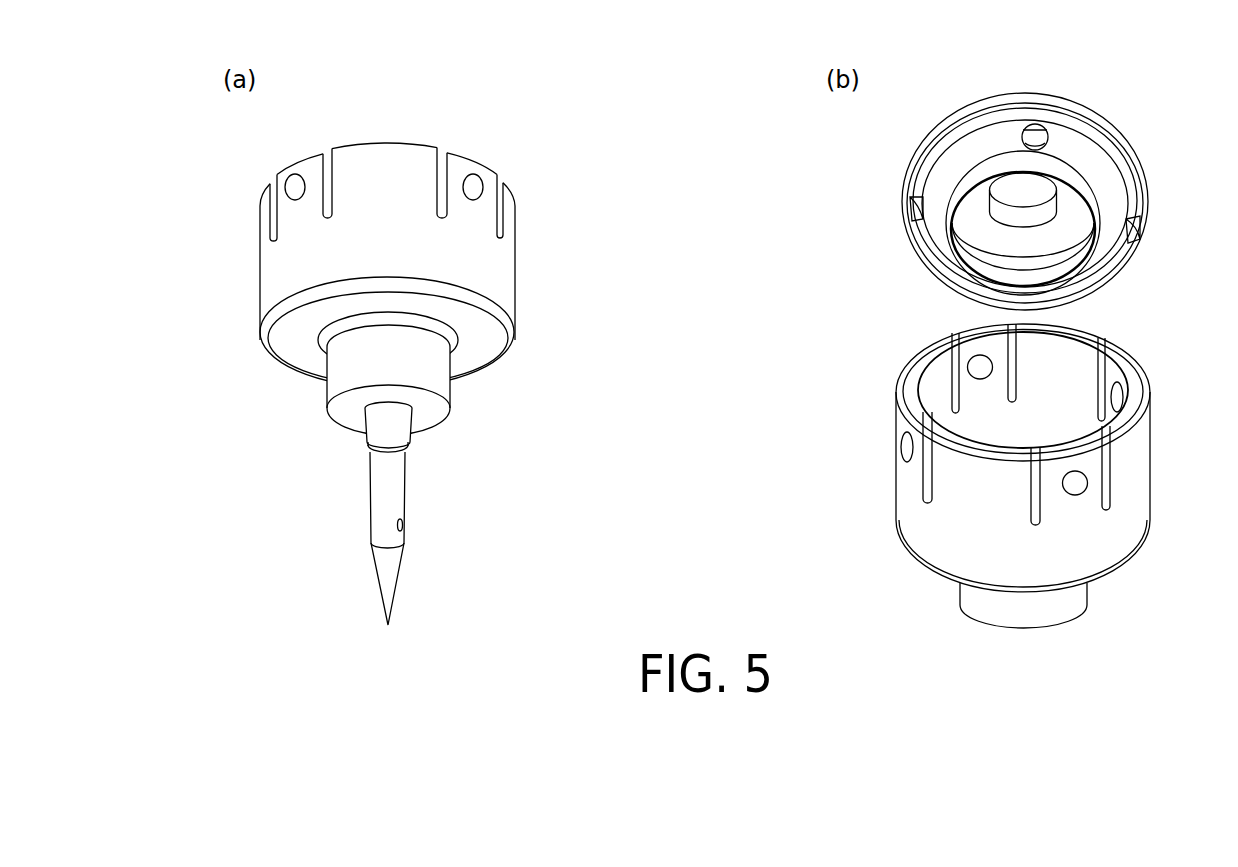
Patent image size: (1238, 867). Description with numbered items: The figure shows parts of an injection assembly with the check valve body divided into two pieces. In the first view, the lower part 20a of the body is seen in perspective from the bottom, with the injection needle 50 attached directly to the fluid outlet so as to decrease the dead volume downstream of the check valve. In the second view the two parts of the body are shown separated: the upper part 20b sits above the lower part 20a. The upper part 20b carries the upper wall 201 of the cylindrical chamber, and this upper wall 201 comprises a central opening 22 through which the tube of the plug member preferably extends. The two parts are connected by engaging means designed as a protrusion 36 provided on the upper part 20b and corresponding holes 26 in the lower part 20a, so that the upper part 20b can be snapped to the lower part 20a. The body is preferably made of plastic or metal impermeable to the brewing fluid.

The lower part of the body 20a is at (530, 273).
The upper part of the body 20b is at (1070, 181).
The central opening 22 is at (1012, 188).
The holes 26 is at (900, 445).
The protrusion 36 is at (1037, 124).
The injection needle 50 is at (390, 487).
The upper wall 201 is at (1103, 117).